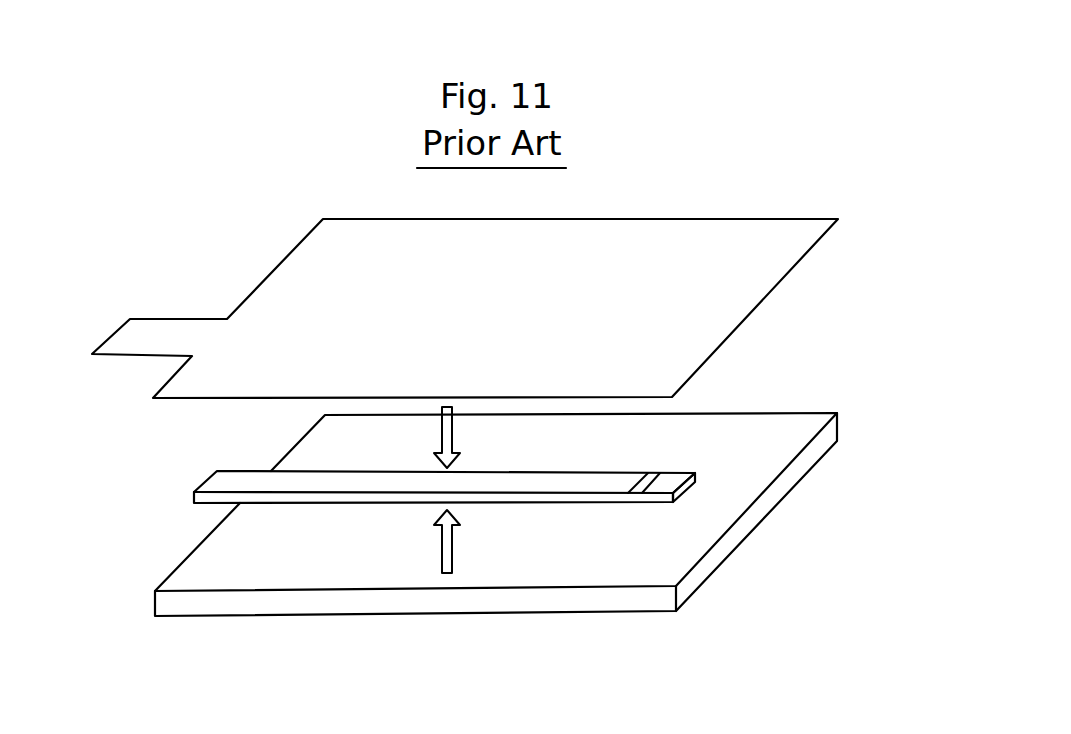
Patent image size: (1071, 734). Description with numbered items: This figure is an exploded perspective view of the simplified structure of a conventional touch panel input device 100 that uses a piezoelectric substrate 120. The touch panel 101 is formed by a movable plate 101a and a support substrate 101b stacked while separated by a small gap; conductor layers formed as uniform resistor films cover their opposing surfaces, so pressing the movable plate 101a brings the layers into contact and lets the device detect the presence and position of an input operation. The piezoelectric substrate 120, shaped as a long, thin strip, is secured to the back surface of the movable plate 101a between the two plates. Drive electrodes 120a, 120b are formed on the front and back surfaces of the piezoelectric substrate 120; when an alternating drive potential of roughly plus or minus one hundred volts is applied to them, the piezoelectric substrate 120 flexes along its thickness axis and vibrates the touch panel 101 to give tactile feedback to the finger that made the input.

The touch panel input device 100 is at (739, 196).
The touch panel 101 is at (174, 569).
The movable plate 101a is at (321, 261).
The support substrate 101b is at (292, 560).
The piezoelectric substrate 120 is at (206, 473).
The drive electrode 120a is at (573, 482).
The drive electrode 120b is at (670, 484).